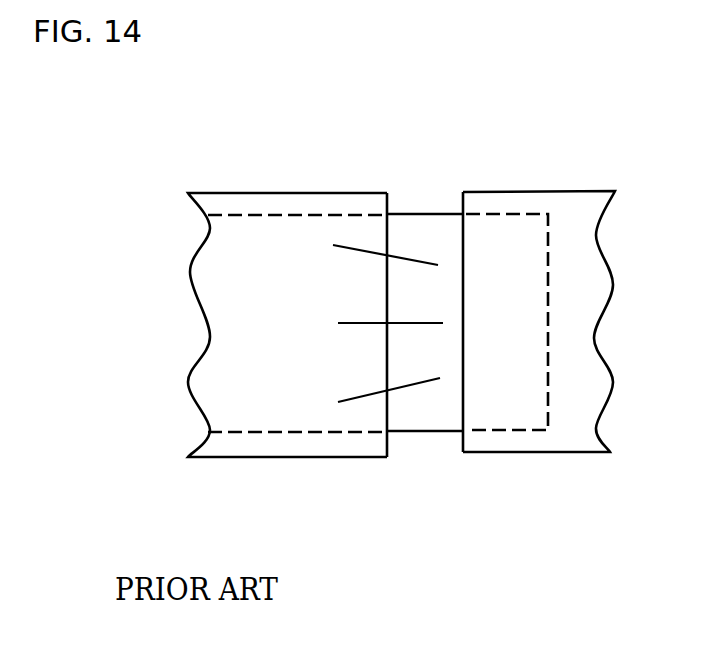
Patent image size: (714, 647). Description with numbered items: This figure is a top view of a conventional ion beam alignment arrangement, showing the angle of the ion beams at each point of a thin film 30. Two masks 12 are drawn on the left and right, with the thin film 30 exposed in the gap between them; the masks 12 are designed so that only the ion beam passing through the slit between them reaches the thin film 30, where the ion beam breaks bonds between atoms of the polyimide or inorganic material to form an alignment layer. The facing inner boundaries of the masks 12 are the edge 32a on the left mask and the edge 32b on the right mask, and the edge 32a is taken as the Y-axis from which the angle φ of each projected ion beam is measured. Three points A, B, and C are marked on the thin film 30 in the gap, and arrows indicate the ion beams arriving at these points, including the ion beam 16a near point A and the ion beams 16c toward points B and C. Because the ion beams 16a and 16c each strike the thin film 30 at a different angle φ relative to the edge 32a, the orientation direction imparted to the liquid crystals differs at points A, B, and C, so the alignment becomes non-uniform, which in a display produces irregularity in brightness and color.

The mask 12 is at (255, 213).
The ion beam 16a is at (413, 258).
The ion beam 16c is at (402, 387).
The thin film 30 is at (433, 225).
The edge of the mask 32a is at (383, 226).
The inner edge of right plate 32b is at (465, 208).
The point A is at (344, 243).
The point B is at (348, 319).
The point C is at (347, 396).